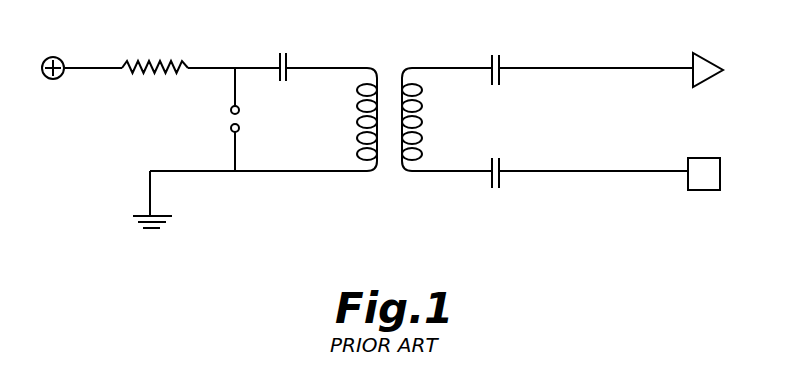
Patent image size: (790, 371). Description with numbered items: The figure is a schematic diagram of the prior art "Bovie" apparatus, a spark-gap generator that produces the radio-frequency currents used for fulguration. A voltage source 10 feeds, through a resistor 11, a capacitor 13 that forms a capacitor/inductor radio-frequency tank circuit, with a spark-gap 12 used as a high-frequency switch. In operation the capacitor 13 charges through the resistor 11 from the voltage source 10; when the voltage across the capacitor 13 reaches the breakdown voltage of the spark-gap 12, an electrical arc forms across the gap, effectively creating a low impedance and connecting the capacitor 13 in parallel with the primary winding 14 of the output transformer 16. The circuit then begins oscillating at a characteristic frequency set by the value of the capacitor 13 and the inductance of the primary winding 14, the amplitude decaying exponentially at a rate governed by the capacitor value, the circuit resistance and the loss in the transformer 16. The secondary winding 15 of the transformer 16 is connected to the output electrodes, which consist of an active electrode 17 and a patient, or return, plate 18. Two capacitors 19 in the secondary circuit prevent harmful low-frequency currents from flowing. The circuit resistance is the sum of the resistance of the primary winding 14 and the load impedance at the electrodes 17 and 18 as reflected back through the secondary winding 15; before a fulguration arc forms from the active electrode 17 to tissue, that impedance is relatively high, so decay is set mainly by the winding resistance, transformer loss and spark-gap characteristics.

The voltage source 10 is at (60, 56).
The resistor 11 is at (156, 60).
The spark-gap 12 is at (240, 121).
The capacitor 13 is at (288, 64).
The primary winding 14 is at (358, 123).
The secondary winding 15 is at (420, 122).
The output transformer 16 is at (321, 132).
The active electrode 17 is at (706, 57).
The patient plate 18 is at (706, 158).
The capacitors 19 is at (500, 65).